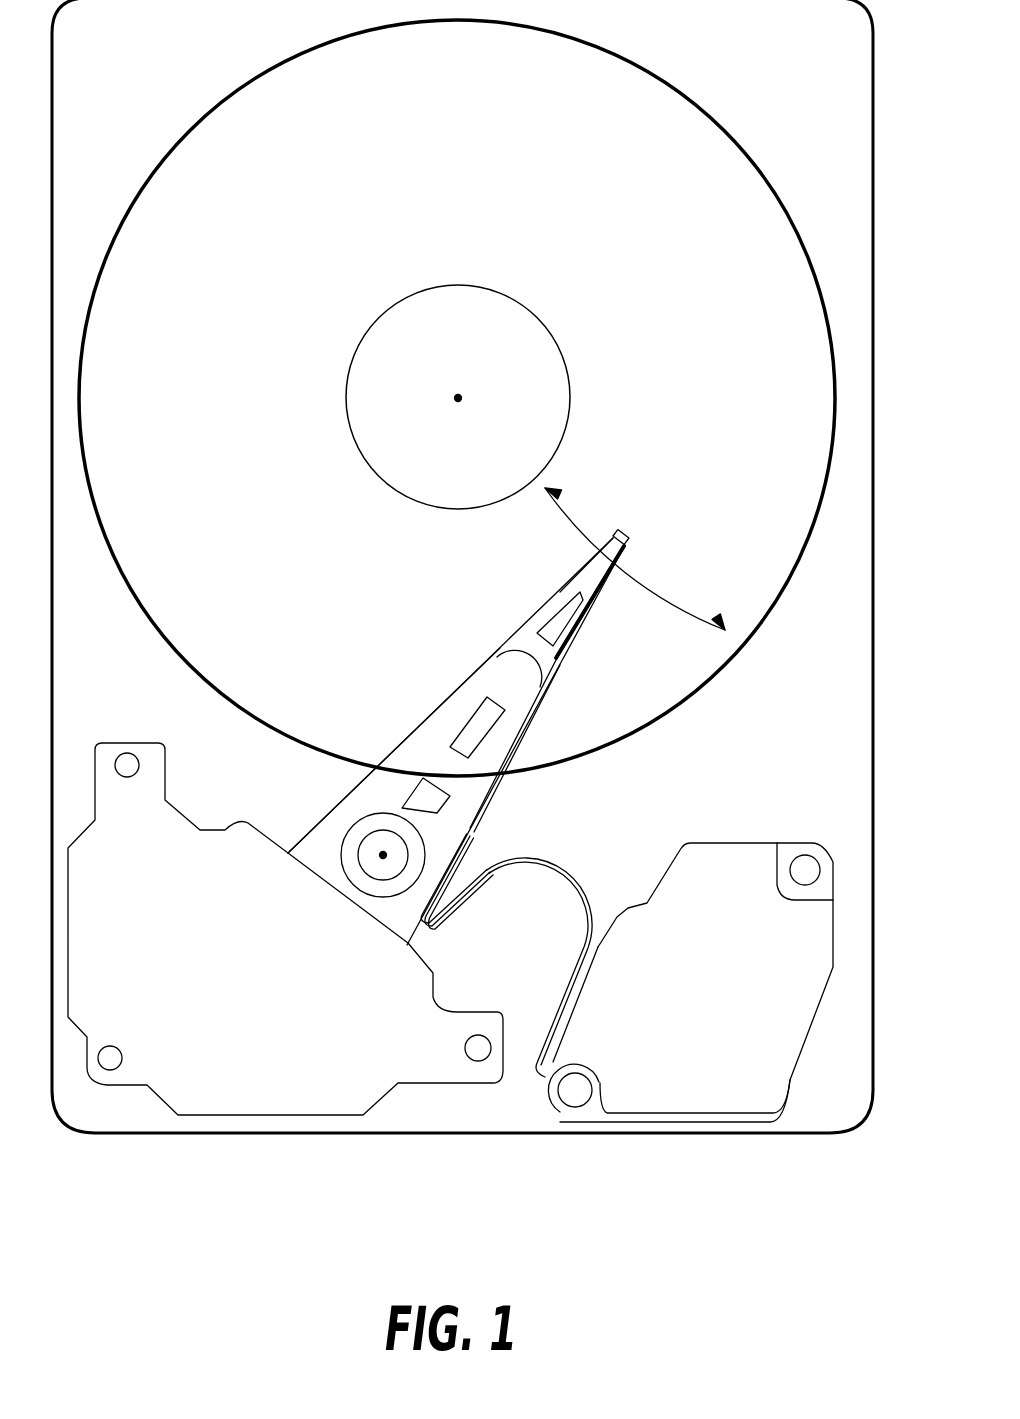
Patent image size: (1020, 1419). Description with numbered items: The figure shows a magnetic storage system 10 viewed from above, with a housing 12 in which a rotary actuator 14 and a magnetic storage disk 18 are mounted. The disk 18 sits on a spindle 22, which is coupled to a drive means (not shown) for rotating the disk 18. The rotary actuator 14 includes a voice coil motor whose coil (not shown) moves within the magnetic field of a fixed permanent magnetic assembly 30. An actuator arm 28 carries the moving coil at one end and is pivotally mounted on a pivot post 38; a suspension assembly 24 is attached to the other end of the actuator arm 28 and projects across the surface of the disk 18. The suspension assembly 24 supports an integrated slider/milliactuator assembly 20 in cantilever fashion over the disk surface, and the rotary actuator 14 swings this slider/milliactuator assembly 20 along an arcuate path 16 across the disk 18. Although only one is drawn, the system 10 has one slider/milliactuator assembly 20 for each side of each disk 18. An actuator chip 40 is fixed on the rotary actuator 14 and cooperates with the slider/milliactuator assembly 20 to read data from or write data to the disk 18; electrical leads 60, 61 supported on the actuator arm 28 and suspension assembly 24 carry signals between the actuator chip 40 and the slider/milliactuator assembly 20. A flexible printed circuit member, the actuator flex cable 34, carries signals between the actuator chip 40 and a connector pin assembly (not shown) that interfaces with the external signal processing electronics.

The magnetic storage system 10 is at (676, 1200).
The housing 12 is at (875, 162).
The rotary actuator 14 is at (318, 793).
The arcuate path 16 is at (678, 577).
The magnetic storage disk 18 is at (731, 125).
The slider/milliactuator assembly 20 is at (626, 531).
The spindle 22 is at (542, 320).
The suspension assembly 24 is at (588, 577).
The actuator arm 28 is at (426, 757).
The fixed permanent magnetic assembly 30 is at (260, 1098).
The actuator flex cable 34 is at (562, 872).
The pivot post 38 is at (380, 855).
The actuator chip 40 is at (478, 872).
The electrical lead 60 is at (555, 663).
The electrical lead 61 is at (555, 663).